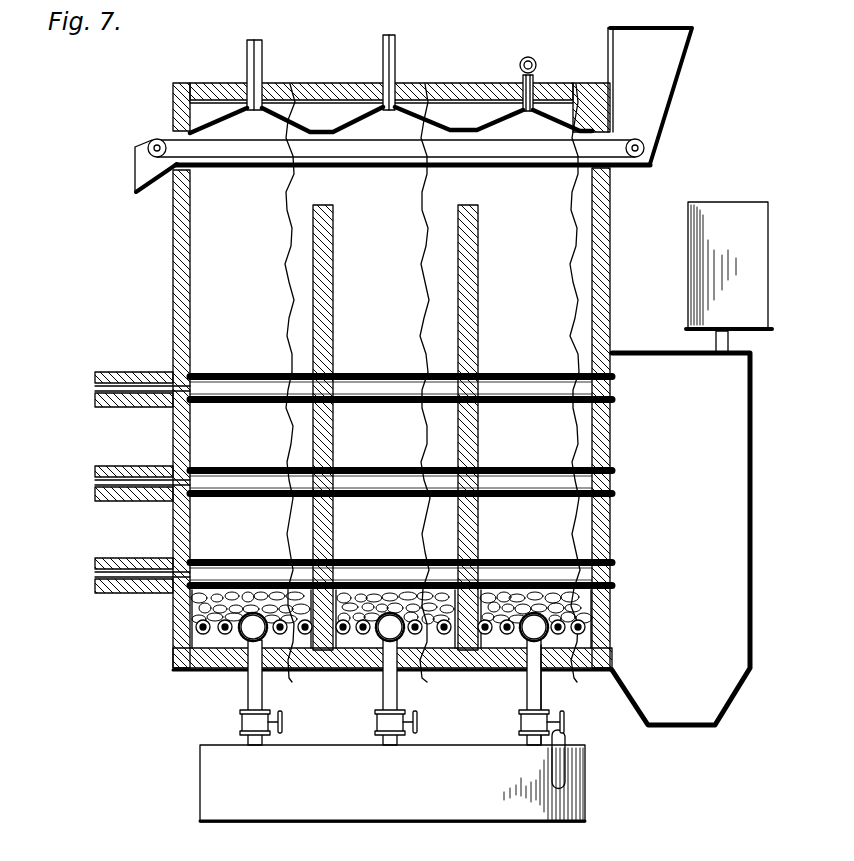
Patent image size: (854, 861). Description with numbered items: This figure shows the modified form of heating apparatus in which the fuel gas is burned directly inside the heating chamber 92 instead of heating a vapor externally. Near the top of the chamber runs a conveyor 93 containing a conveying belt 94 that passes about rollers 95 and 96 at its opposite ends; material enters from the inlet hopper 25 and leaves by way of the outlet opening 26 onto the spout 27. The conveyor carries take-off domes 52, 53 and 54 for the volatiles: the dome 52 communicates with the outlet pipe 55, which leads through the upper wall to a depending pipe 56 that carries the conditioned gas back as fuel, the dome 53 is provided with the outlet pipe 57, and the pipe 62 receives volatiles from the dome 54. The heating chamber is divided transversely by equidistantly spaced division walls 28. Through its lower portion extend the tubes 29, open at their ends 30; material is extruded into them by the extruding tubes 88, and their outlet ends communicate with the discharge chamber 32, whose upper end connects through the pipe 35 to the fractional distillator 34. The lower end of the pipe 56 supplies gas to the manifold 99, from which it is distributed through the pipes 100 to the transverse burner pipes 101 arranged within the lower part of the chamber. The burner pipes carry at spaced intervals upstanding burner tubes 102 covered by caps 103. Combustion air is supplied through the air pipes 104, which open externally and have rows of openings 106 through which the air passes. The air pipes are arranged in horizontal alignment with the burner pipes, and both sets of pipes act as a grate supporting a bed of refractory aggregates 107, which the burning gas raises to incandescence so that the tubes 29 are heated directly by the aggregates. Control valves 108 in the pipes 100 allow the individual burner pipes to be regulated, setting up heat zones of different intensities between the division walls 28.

The inlet hopper 25 is at (650, 96).
The conveyor outlet opening 26 is at (176, 133).
The spout 27 is at (135, 183).
The division wall 28 is at (334, 300).
The tube 29 is at (240, 373).
The open tube end 30 is at (172, 373).
The discharge chamber 32 is at (681, 539).
The fractional distillator 34 is at (729, 265).
The pipe 35 is at (716, 342).
The dome 52 is at (540, 108).
The dome 53 is at (450, 121).
The dome 54 is at (286, 122).
The outlet pipe 55 is at (523, 83).
The fuel pipe 56 is at (534, 60).
The outlet pipe 57 is at (383, 62).
The pipe 62 is at (262, 72).
The extruding tube 88 is at (120, 406).
The heating chamber 92 is at (173, 284).
The conveyor 93 is at (548, 170).
The conveying belt 94 is at (522, 129).
The roller 95 is at (635, 158).
The roller 96 is at (150, 141).
The manifold 99 is at (392, 783).
The distribution pipe 100 is at (543, 676).
The transverse burner pipe 101 is at (248, 672).
The burner tube 102 is at (389, 612).
The cap 103 is at (262, 596).
The air pipe 104 is at (185, 660).
The air opening 106 is at (586, 628).
The refractory aggregate 107 is at (196, 627).
The control valve 108 is at (374, 723).